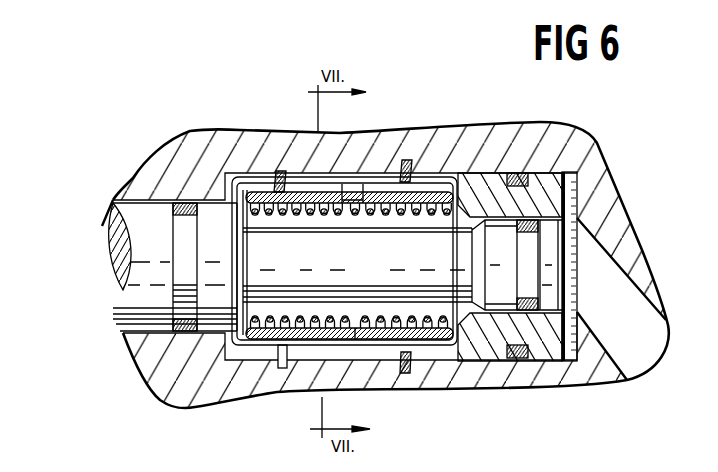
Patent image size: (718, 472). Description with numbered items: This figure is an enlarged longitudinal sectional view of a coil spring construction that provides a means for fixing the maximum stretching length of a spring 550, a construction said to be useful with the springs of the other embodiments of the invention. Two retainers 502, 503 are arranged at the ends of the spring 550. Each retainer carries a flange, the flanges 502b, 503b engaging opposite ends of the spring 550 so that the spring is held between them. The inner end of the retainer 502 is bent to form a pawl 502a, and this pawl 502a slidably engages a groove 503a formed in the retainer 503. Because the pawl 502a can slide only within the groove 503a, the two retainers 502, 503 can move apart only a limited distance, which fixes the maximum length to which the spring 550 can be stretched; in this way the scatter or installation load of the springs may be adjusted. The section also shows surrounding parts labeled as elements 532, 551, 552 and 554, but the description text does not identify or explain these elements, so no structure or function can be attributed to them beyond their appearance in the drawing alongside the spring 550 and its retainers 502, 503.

The housing 532 is at (632, 300).
The threaded nut 554 is at (555, 198).
The piston rod 551 is at (497, 252).
The spring 550 is at (363, 340).
The retainer 503 is at (254, 173).
The groove 503a is at (283, 172).
The flange 503b is at (224, 198).
The retainer 502 is at (428, 187).
The pawl 502a is at (345, 197).
The flange 502b is at (450, 328).
The shaft 552 is at (145, 260).